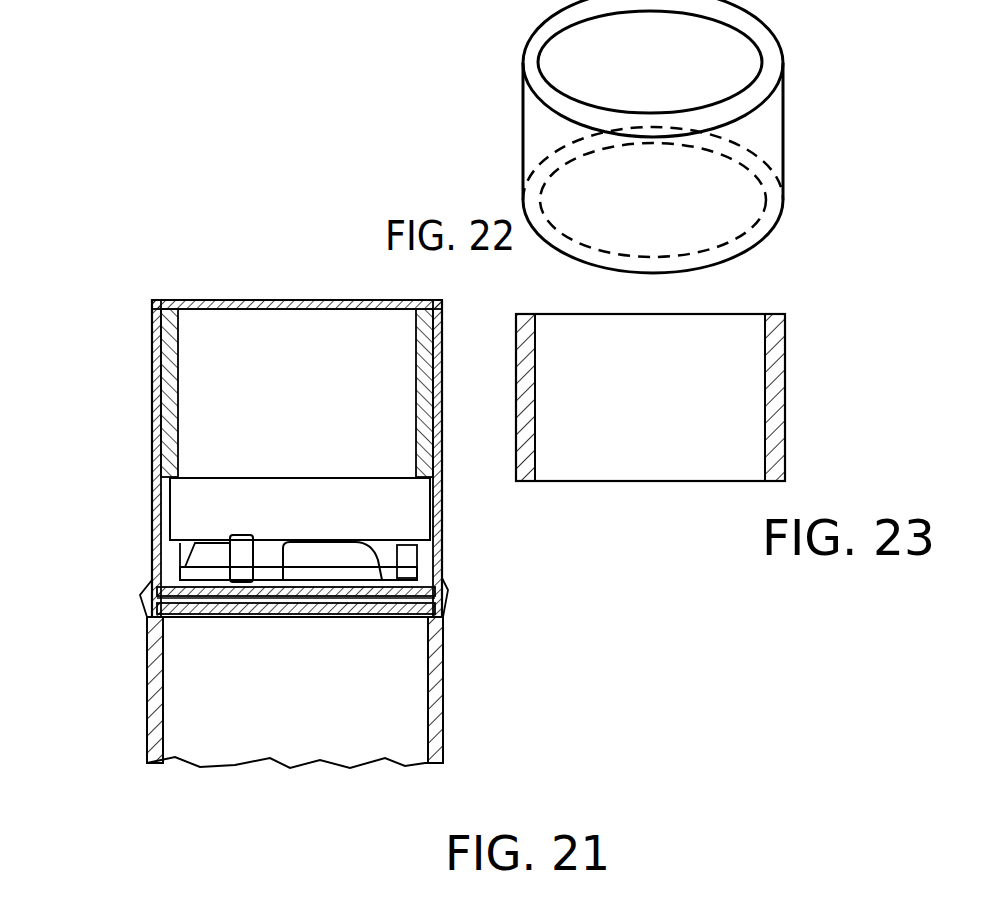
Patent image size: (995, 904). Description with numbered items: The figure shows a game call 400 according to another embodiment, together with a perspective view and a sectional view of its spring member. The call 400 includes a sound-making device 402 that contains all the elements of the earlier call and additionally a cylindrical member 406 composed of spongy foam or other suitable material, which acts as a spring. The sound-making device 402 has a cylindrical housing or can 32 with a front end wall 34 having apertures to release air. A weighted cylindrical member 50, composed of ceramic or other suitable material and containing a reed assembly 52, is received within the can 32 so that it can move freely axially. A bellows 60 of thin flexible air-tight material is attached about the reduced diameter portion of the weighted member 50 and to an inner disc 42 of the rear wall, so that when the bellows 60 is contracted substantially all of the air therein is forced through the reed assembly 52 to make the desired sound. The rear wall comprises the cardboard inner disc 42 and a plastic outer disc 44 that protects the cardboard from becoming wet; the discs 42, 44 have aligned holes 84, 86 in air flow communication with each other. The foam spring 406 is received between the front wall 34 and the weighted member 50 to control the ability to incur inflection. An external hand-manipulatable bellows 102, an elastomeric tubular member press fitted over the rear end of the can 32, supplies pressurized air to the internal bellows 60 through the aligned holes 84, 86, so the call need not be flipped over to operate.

In FIG. 21, the game call 400 is at (115, 324).
In FIG. 21, the sound-making device 402 is at (152, 462).
In FIG. 21, the cylindrical member 406 is at (180, 400).
In FIG. 22, the cylindrical member 406 is at (503, 82).
In FIG. 23, the cylindrical member 406 is at (778, 368).
In FIG. 21, the front end wall 34 is at (209, 300).
In FIG. 21, the cylindrical housing or can 32 is at (438, 400).
In FIG. 21, the weighted cylindrical member 50 is at (326, 531).
In FIG. 21, the reed assembly 52 is at (322, 541).
In FIG. 21, the bellows 60 is at (413, 560).
In FIG. 21, the inner disc 42 is at (442, 582).
In FIG. 21, the outer disc 44 is at (443, 622).
In FIG. 21, the external bellows 102 is at (443, 693).
In FIG. 21, the hole 84 is at (297, 615).
In FIG. 21, the hole 86 is at (293, 615).